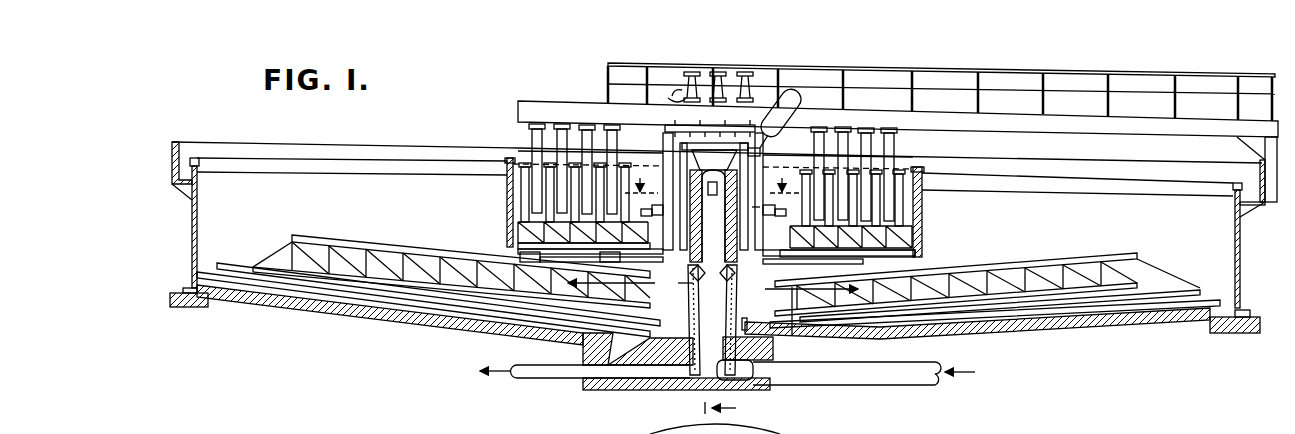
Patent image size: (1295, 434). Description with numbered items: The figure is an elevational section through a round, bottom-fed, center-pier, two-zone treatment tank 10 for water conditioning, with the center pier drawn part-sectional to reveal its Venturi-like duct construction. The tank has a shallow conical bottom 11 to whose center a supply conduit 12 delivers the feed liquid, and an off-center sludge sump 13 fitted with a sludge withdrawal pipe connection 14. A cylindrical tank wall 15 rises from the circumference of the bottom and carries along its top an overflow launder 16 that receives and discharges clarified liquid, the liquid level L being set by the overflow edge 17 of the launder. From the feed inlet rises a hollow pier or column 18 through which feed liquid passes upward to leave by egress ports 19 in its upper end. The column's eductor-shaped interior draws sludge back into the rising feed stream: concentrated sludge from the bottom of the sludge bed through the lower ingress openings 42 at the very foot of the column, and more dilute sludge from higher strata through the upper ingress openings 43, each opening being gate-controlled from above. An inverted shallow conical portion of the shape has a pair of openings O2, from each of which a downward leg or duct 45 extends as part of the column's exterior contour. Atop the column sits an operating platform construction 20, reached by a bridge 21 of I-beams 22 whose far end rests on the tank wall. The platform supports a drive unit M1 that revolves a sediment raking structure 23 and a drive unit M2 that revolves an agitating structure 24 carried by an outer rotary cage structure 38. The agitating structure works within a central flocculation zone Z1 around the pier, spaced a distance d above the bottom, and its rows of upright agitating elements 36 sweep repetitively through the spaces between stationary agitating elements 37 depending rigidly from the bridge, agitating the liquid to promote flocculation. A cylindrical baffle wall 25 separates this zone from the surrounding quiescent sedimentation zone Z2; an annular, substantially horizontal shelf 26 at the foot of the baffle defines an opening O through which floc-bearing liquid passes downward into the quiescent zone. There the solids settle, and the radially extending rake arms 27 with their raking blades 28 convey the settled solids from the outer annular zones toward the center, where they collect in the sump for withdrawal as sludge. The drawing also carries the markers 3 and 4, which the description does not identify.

The treatment tank 10 is at (440, 135).
The liquid level L is at (304, 154).
The overflow launder 16 is at (179, 142).
The overflow edge 17 is at (200, 158).
The cylindrical tank wall 15 is at (198, 216).
The cylindrical baffle wall 25 is at (921, 221).
The shallow conical bottom 11 is at (453, 320).
The sludge sump 13 is at (603, 347).
The sludge withdrawal pipe connection 14 is at (553, 376).
The supply conduit 12 is at (891, 386).
The lower ingress openings 42 is at (728, 322).
The dimension 4 is at (730, 409).
The upper ingress openings 43 is at (715, 216).
The egress ports 19 is at (699, 192).
The hollow pier or column 18 is at (690, 210).
The operating platform construction 20 is at (665, 128).
The outer rotary cage structure 38 is at (762, 152).
The drive unit M2 is at (786, 86).
The drive unit M1 is at (668, 87).
The bridge 21 is at (891, 102).
The I-beams 22 is at (1086, 139).
The stationary agitating elements 37 is at (534, 125).
The upright agitating elements 36 is at (515, 161).
The dimension 3 is at (713, 183).
The agitating structure 24 is at (758, 208).
The rake arms 27 is at (393, 240).
The raking blades 28 is at (357, 293).
The annular horizontal shelf 26 is at (540, 262).
The flocculation zone Z1 is at (510, 196).
The quiescent sedimentation zone Z2 is at (1114, 229).
The sediment raking structure 23 is at (646, 270).
The opening O is at (630, 284).
The openings O2 is at (733, 290).
The downward leg or duct 45 is at (734, 308).
The distance d is at (811, 311).